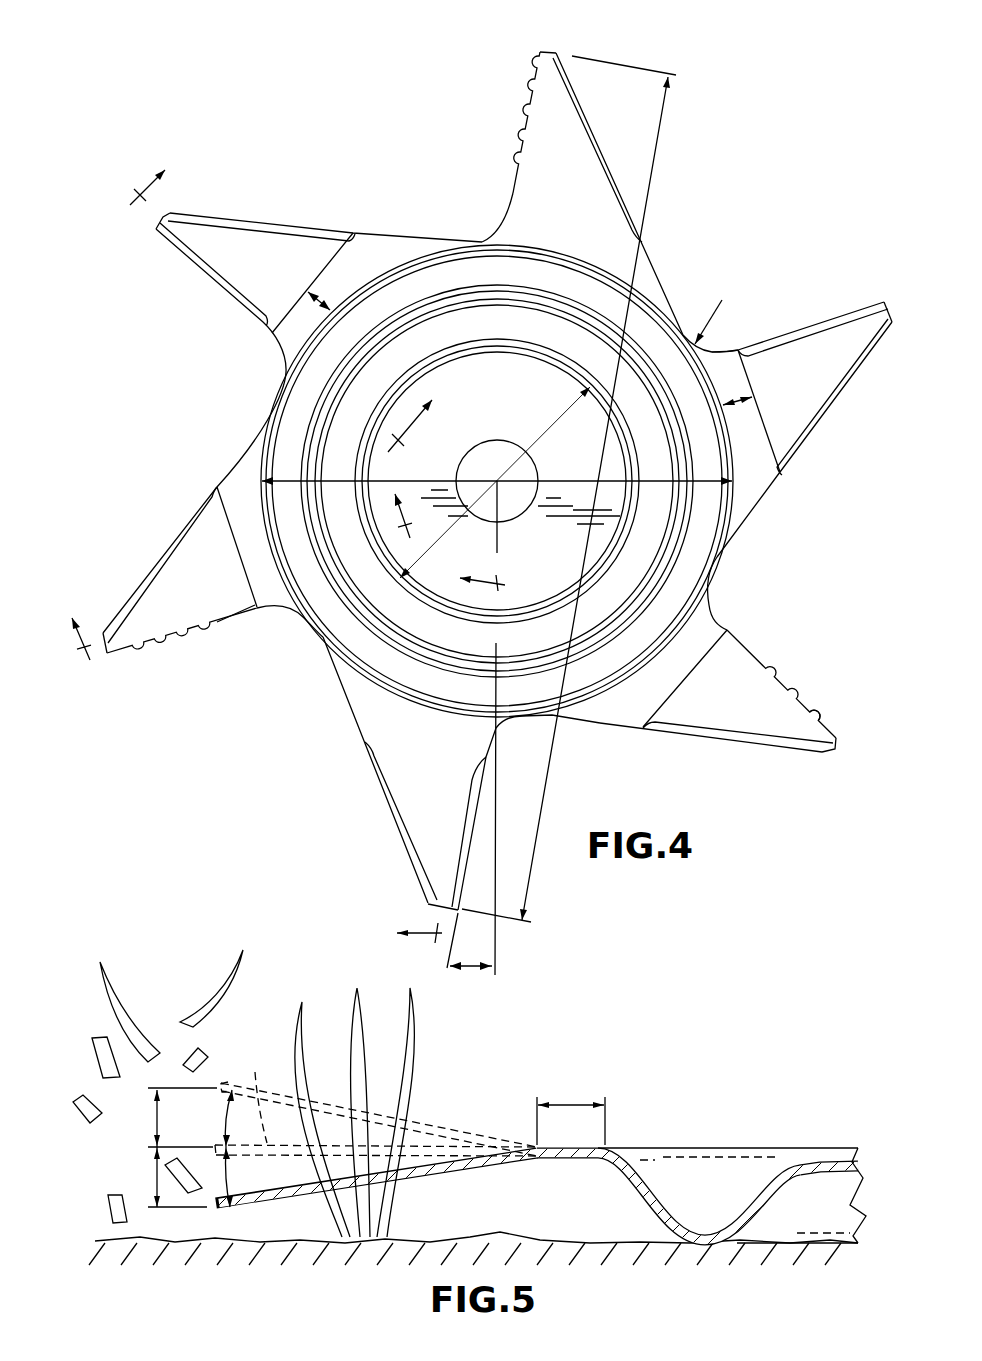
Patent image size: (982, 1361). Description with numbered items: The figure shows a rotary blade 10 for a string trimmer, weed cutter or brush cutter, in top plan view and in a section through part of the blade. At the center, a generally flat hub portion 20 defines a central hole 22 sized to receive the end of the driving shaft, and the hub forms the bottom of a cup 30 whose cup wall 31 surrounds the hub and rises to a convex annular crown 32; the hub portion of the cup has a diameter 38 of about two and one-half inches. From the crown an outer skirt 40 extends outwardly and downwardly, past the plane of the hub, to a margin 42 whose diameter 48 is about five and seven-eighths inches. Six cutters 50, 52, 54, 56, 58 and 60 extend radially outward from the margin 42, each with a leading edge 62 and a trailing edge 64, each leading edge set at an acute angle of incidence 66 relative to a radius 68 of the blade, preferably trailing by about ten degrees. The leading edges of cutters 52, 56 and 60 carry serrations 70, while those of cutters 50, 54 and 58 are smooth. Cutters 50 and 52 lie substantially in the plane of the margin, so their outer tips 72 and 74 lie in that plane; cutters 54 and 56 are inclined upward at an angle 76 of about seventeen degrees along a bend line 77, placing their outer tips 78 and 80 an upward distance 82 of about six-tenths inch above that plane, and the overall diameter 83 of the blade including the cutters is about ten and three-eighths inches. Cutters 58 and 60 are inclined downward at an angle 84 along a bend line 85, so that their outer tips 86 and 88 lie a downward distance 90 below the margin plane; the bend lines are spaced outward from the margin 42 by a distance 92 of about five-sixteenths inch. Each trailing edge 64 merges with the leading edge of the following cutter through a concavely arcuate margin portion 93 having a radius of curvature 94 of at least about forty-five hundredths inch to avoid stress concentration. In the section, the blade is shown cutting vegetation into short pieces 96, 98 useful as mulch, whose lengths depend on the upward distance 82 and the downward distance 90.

In FIG. 4, the rotary blade 10 is at (305, 100).
In FIG. 5, the rotary blade 10 is at (745, 1097).
In FIG. 4, the hub portion 20 is at (531, 356).
In FIG. 5, the hub portion 20 is at (843, 1160).
In FIG. 4, the central hole 22 is at (476, 460).
In FIG. 4, the cup 30 is at (483, 355).
In FIG. 4, the cup wall 31 is at (410, 362).
In FIG. 5, the cup wall 31 is at (763, 1217).
In FIG. 4, the convex annular crown 32 is at (435, 665).
In FIG. 5, the convex annular crown 32 is at (707, 1248).
In FIG. 4, the diameter of hub portion 38 is at (560, 417).
In FIG. 4, the outer skirt 40 is at (707, 592).
In FIG. 5, the outer skirt 40 is at (645, 1200).
In FIG. 4, the margin of outer skirt 42 is at (732, 463).
In FIG. 5, the margin of outer skirt 42 is at (615, 1148).
In FIG. 4, the diameter of outer skirt 48 is at (575, 472).
In FIG. 4, the cutter 50 is at (400, 773).
In FIG. 5, the cutter 50 is at (376, 1100).
In FIG. 4, the cutter 52 is at (577, 143).
In FIG. 4, the cutter 54 is at (272, 242).
In FIG. 5, the cutter 54 is at (383, 1115).
In FIG. 4, the cutter 56 is at (715, 715).
In FIG. 4, the cutter 58 is at (843, 357).
In FIG. 4, the cutter 60 is at (148, 603).
In FIG. 5, the cutter 60 is at (440, 1177).
In FIG. 4, the leading edge 62 is at (530, 108).
In FIG. 4, the trailing edge 64 is at (237, 220).
In FIG. 4, the angle of incidence 66 is at (468, 970).
In FIG. 4, the radius 68 is at (495, 787).
In FIG. 4, the serrations 70 is at (827, 713).
In FIG. 4, the outer tip 72 is at (440, 907).
In FIG. 4, the outer tip 74 is at (553, 52).
In FIG. 5, the angle 76 is at (217, 1127).
In FIG. 4, the bend line 77 is at (327, 263).
In FIG. 4, the outer tip 78 is at (165, 213).
In FIG. 4, the outer tip 80 is at (836, 748).
In FIG. 5, the distance 82 is at (153, 1123).
In FIG. 4, the diameter of rotary blade 83 is at (655, 163).
In FIG. 5, the angle 84 is at (227, 1180).
In FIG. 4, the bend line 85 is at (772, 435).
In FIG. 4, the outer tip 86 is at (890, 305).
In FIG. 4, the outer tip 88 is at (105, 655).
In FIG. 5, the distance 90 is at (153, 1177).
In FIG. 4, the distance 92 is at (307, 292).
In FIG. 5, the distance 92 is at (568, 1097).
In FIG. 4, the margin portion 93 is at (722, 352).
In FIG. 4, the radius of curvature 94 is at (722, 300).
In FIG. 5, the short pieces 96 is at (83, 1117).
In FIG. 5, the short pieces 98 is at (110, 1210).